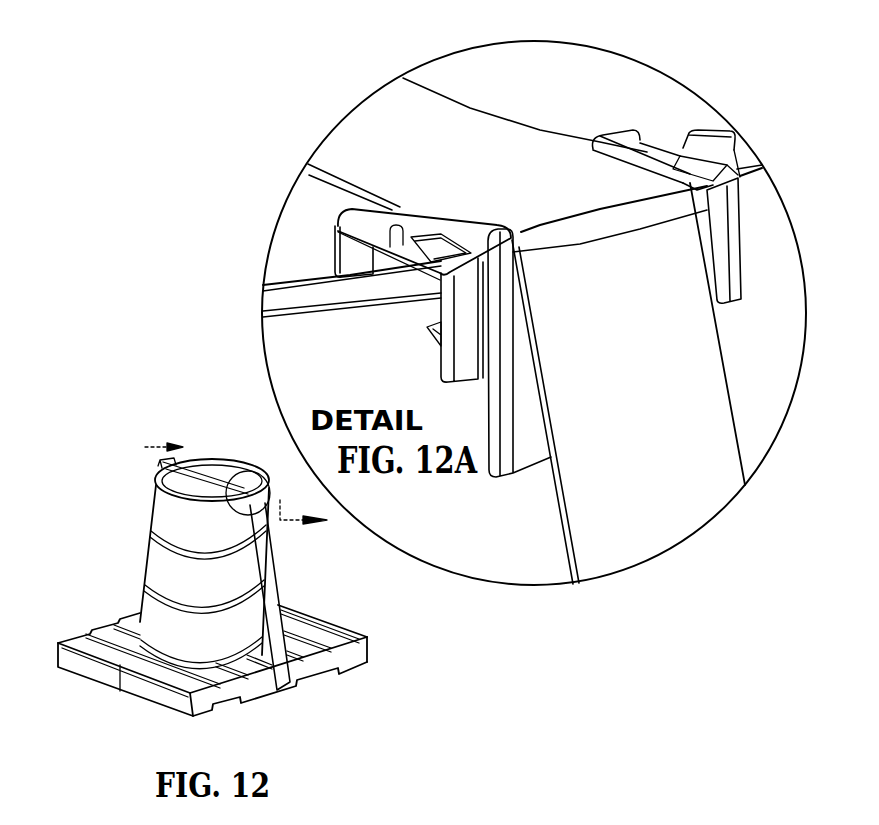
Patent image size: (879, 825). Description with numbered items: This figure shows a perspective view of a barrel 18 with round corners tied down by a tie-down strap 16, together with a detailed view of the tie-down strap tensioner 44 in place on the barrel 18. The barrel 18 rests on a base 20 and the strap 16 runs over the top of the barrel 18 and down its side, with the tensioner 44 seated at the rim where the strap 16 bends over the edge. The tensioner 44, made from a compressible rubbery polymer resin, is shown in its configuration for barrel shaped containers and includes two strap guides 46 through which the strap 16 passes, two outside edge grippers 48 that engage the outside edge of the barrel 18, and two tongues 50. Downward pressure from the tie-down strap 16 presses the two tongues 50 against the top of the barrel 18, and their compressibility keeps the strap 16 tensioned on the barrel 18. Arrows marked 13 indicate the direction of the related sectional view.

In FIG. 12, the section view direction indicator 13 is at (238, 483).
In FIG. 12, the tie-down strap 16 is at (262, 557).
In FIG. 12A, the tie-down strap 16 is at (632, 352).
In FIG. 12, the barrel 18 is at (220, 587).
In FIG. 12A, the barrel 18 is at (463, 521).
In FIG. 12, the pallet 20 is at (300, 657).
In FIG. 12, the tie-down strap tensioner 44 is at (243, 497).
In FIG. 12A, the strap guide 46 is at (633, 140).
In FIG. 12A, the outside edge gripper 48 is at (432, 332).
In FIG. 12A, the tongue 50 is at (353, 265).